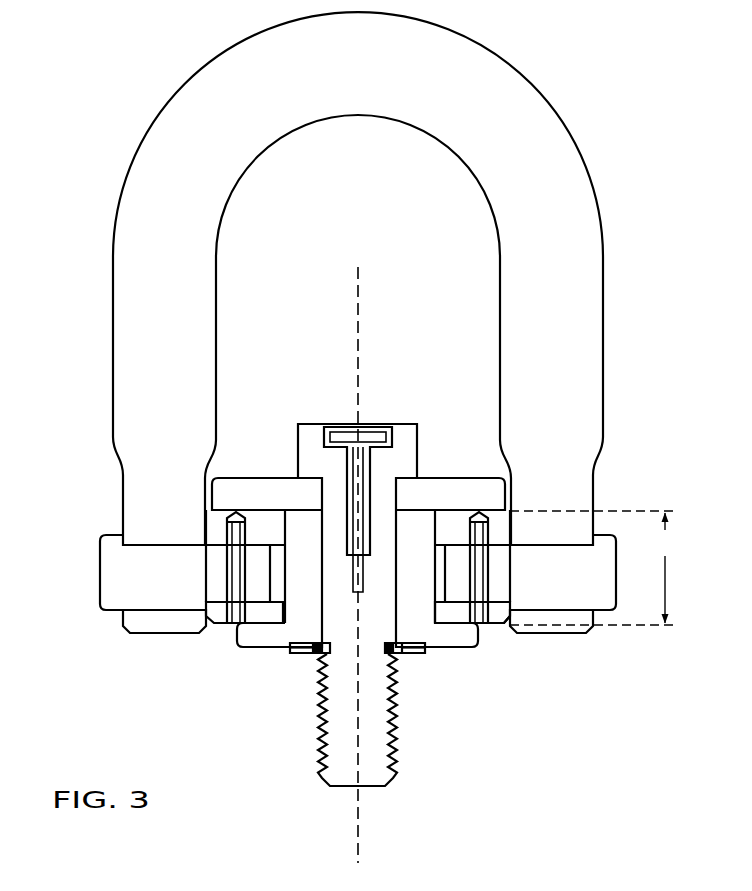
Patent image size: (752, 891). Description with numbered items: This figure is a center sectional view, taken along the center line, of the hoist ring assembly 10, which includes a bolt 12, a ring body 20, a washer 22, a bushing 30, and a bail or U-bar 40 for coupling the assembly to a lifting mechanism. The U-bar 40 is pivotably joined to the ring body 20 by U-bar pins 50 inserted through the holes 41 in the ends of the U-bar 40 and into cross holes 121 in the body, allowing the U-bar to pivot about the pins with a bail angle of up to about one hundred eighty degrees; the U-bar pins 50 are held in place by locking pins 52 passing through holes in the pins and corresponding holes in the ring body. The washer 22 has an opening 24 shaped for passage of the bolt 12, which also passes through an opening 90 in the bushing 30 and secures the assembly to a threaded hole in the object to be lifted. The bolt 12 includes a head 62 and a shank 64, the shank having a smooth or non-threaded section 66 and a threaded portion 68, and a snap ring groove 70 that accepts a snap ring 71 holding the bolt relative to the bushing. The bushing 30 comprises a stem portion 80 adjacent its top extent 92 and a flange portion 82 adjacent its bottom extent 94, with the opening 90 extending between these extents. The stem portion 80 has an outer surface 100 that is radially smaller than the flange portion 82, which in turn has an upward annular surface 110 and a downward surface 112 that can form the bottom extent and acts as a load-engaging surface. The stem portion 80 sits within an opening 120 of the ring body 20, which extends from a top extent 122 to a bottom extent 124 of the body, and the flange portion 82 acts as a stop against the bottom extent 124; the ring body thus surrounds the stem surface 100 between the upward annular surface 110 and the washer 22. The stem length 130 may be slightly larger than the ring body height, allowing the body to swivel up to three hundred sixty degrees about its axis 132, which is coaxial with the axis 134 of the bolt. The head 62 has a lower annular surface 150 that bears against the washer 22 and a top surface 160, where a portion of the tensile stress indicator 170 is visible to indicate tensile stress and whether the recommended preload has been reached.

The hoist ring assembly 10 is at (582, 58).
The bolt 12 is at (377, 728).
The ring body 20 is at (508, 518).
The washer 22 is at (240, 493).
The opening 24 is at (325, 477).
The bushing 30 is at (296, 558).
The U-bar 40 is at (567, 145).
The holes 41 is at (166, 538).
The U-bar pins 50 is at (100, 576).
The locking pins 52 is at (225, 590).
The head 62 is at (405, 450).
The shank 64 is at (367, 646).
The smooth or non-threaded section 66 is at (327, 658).
The threaded portion 68 is at (375, 758).
The snap ring groove 70 is at (394, 652).
The snap ring 71 is at (306, 656).
The stem portion 80 is at (412, 568).
The flange portion 82 is at (470, 638).
The opening 90 is at (328, 614).
The top extent 92 is at (296, 506).
The bottom extent 94 is at (251, 680).
The outer surface 100 is at (276, 587).
The upward annular surface 110 is at (265, 619).
The downward surface 112 is at (279, 661).
The opening 120 is at (424, 508).
The cross holes 121 is at (451, 605).
The top extent 122 is at (474, 504).
The bottom extent 124 is at (497, 628).
The stem length 130 is at (595, 568).
The axis 132 is at (298, 565).
The axis 134 is at (357, 835).
The lower annular surface 150 is at (410, 493).
The top surface 160 is at (313, 419).
The tensile stress indicator 170 is at (368, 413).